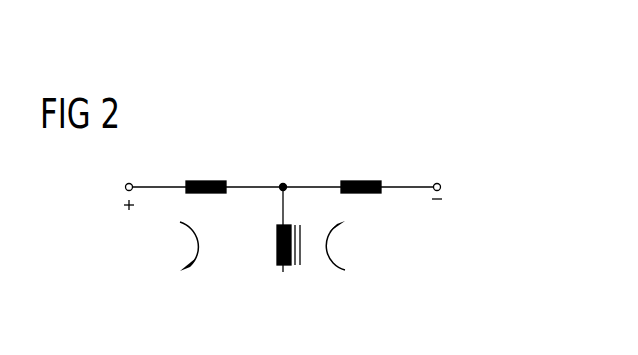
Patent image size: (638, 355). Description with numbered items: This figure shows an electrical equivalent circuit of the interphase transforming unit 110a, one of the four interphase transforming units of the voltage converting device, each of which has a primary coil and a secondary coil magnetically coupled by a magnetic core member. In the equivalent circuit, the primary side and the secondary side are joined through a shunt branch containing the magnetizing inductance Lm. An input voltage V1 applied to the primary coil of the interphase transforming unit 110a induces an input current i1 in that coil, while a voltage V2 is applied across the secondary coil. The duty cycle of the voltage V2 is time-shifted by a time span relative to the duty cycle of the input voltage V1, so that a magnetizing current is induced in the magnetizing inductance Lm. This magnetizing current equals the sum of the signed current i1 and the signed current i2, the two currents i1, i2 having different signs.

The interphase transforming unit 110a is at (458, 172).
The magnetizing inductance Lm is at (277, 245).
The input voltage V1 is at (132, 246).
The voltage across the secondary coil V2 is at (441, 246).
The input current i1 is at (181, 246).
The secondary current i2 is at (344, 245).